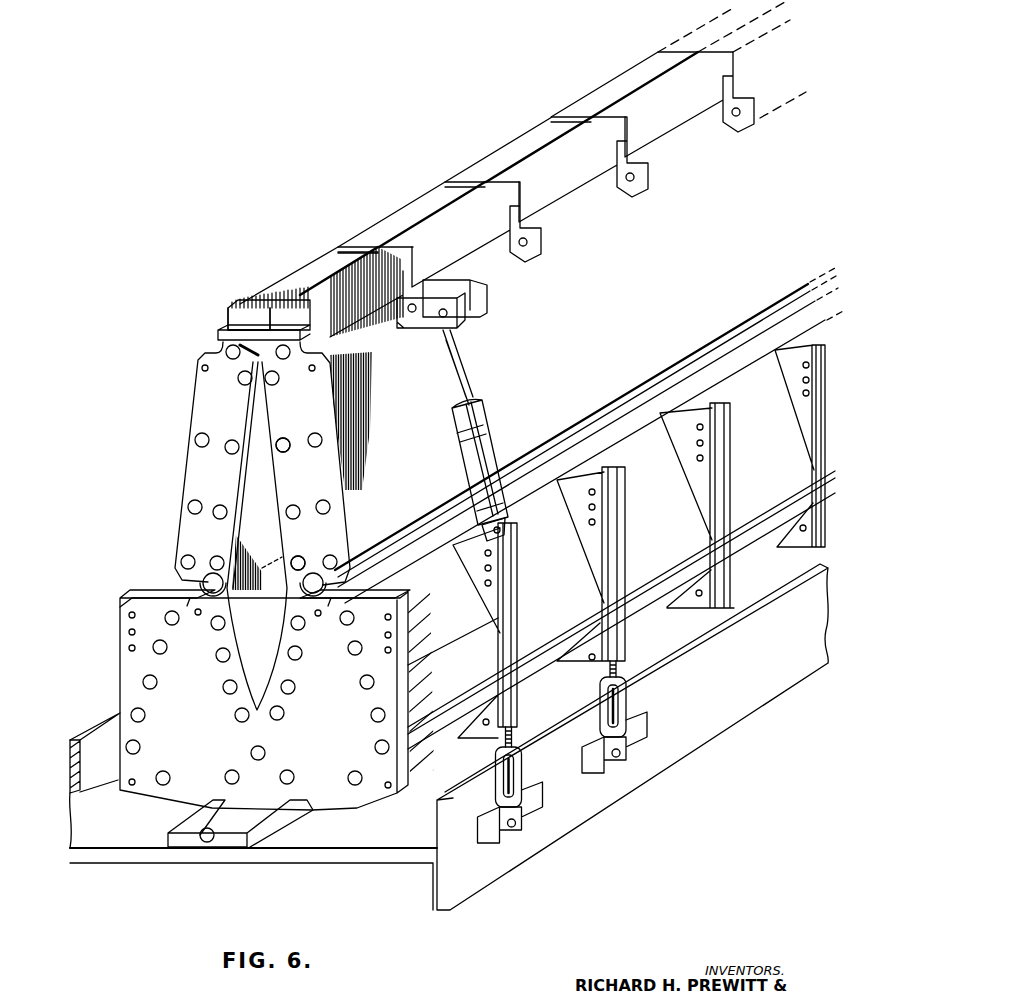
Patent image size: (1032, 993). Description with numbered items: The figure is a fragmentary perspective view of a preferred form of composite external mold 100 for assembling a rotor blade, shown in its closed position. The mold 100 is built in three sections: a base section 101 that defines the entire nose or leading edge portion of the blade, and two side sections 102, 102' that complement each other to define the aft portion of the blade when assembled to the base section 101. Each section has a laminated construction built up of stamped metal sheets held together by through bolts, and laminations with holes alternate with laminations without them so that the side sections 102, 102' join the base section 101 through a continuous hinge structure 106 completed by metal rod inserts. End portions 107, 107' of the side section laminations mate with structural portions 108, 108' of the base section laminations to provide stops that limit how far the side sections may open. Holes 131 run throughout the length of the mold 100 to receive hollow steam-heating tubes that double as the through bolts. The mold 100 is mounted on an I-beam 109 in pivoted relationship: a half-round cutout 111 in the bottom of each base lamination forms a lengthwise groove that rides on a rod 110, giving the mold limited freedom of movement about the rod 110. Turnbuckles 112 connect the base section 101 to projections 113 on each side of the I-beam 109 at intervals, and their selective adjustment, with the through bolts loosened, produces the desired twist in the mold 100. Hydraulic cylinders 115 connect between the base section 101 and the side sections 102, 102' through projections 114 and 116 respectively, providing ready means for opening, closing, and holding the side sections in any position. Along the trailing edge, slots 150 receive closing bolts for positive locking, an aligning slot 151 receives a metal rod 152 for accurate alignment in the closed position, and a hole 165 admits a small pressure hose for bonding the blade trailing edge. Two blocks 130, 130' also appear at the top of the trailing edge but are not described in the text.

The composite external mold 100 is at (349, 190).
The base section 101 is at (332, 772).
The side section 102 is at (347, 462).
The side section 102' is at (196, 462).
The continuous hinge structure 106 is at (292, 600).
The end portion 107 is at (375, 589).
The end portion 107' is at (165, 587).
The structural portion 108 is at (319, 650).
The structural portion 108' is at (188, 631).
The I-beam 109 is at (645, 770).
The rod 110 is at (223, 817).
The half-round cutout 111 is at (257, 800).
The turnbuckles 112 is at (527, 773).
The projections 113 is at (517, 713).
The projections 114 is at (587, 523).
The hydraulic cylinders 115 is at (492, 448).
The projections 116 is at (530, 264).
The clamp block 130 is at (291, 310).
The clamp block 130' is at (216, 320).
The holes 131 is at (303, 509).
The slots 150 is at (445, 180).
The aligning slot 151 is at (296, 339).
The metal rod 152 is at (222, 345).
The hole 165 is at (258, 346).